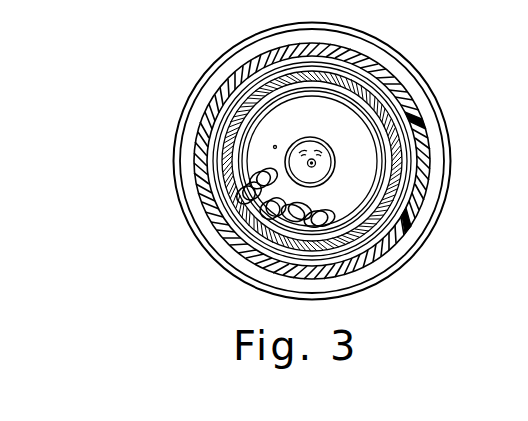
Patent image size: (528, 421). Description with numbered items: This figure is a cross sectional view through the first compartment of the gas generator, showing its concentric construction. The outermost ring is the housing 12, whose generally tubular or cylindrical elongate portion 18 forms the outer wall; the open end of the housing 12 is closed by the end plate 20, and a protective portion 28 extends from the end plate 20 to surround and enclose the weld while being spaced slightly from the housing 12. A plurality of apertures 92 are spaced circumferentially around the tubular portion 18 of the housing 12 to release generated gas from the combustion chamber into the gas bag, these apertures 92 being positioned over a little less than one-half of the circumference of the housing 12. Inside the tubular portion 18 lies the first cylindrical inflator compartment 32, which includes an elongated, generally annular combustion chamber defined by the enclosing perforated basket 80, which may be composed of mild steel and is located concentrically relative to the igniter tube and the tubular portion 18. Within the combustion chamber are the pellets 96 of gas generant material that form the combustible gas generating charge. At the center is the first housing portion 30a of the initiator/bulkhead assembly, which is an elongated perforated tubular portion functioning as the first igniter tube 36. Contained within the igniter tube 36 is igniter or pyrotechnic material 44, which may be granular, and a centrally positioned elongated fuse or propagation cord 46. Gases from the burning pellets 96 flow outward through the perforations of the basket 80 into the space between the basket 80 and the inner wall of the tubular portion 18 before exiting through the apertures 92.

The housing 12 is at (269, 51).
The tubular portion 18 is at (330, 53).
The end plate 20 is at (382, 46).
The protective portion 28 is at (407, 82).
The apertures 92 is at (413, 114).
The perforated basket 80 is at (397, 152).
The first cylindrical inflator compartment 32 is at (372, 178).
The first housing portion 30a is at (340, 155).
The igniter tube 36 is at (310, 137).
The igniter material 44 is at (302, 146).
The fuse cord 46 is at (315, 166).
The pellets 96 is at (255, 194).